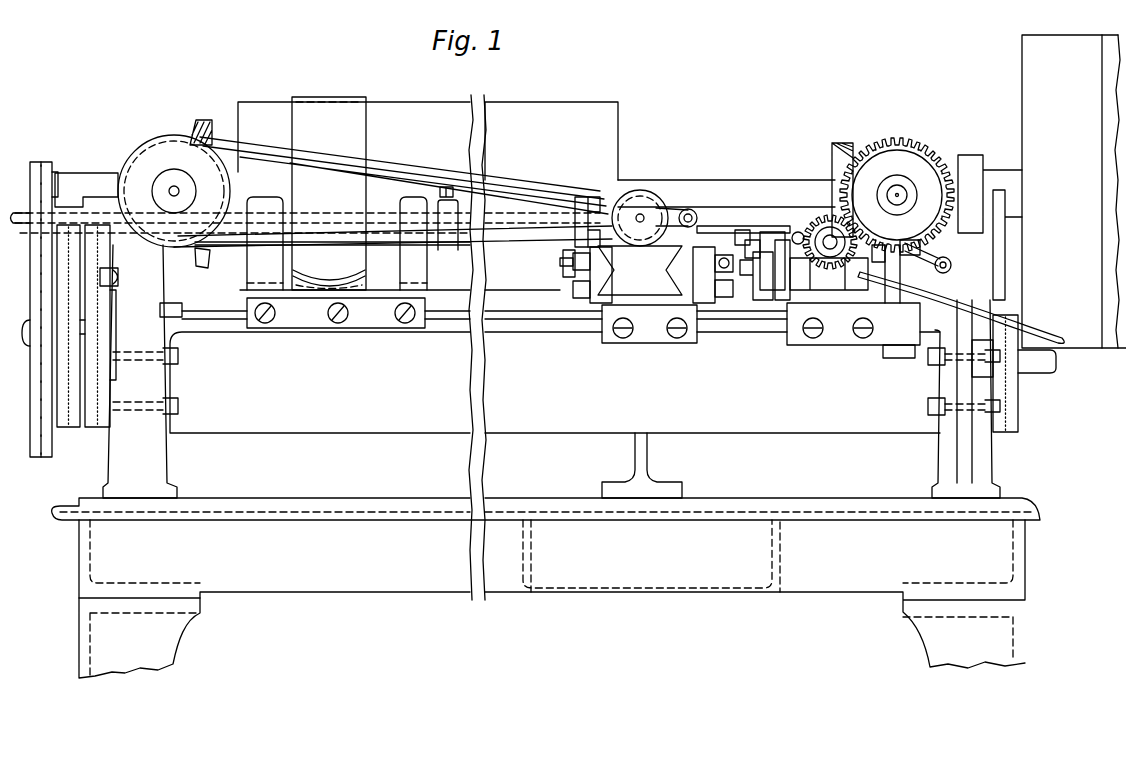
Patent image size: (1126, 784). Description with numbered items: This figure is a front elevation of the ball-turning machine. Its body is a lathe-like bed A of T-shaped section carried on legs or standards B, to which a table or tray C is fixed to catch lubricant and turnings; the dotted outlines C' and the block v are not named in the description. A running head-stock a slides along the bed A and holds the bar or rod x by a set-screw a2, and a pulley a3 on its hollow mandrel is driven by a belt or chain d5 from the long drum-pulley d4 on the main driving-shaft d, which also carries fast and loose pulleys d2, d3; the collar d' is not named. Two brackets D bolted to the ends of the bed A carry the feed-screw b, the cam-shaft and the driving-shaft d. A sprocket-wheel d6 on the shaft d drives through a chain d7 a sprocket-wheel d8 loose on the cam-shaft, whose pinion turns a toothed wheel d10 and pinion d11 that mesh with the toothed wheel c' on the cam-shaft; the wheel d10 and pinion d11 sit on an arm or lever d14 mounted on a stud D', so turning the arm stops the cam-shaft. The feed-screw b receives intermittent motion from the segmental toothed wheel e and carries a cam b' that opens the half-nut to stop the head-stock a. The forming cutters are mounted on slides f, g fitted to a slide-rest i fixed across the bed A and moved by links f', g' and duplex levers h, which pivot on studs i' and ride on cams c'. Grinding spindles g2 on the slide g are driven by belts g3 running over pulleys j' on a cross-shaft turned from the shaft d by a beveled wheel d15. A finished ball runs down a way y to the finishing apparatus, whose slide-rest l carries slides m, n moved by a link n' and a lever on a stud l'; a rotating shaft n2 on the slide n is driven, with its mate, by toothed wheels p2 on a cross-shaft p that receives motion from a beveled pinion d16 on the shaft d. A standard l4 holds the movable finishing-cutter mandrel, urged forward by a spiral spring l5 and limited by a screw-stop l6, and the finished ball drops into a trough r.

The bed A is at (473, 313).
The legs or standards B is at (552, 599).
The table or tray C is at (546, 512).
The base rail panel C' is at (651, 556).
The brackets D is at (551, 371).
The stud D' is at (123, 279).
The running head-stock a is at (377, 243).
The set-screw a2 is at (455, 188).
The pulley a3 is at (329, 271).
The feed-screw b is at (1044, 367).
The cam b' is at (1005, 358).
The toothed wheel c' is at (79, 326).
The main driving-shaft d is at (425, 203).
The collar d' is at (448, 225).
The fast pulley d2 is at (1042, 191).
The loose pulley d3 is at (1110, 191).
The long drum-pulley d4 is at (428, 141).
The belt or chain d5 is at (329, 193).
The sprocket-wheel d6 is at (52, 172).
The chain d7 is at (30, 250).
The sprocket-wheel d8 is at (17, 297).
The toothed wheel d10 is at (72, 328).
The toothed pinion d11 is at (97, 326).
The arm or lever d14 is at (116, 393).
The beveled wheel d15 is at (203, 118).
The beveled toothed pinion d16 is at (848, 178).
The segmental toothed wheel e is at (1014, 373).
The slide f is at (601, 275).
The link f' is at (582, 275).
The slide g is at (697, 275).
The link g' is at (714, 276).
The spindles g2 is at (640, 218).
The belts g3 is at (393, 195).
The duplex levers h is at (573, 262).
The slide-rest i is at (647, 294).
The studs i' is at (633, 259).
The pulleys j' is at (174, 201).
The slide-rest l is at (892, 274).
The stud or axis l' is at (755, 276).
The standard l4 is at (920, 253).
The spiral spring l5 is at (883, 253).
The screw-stop l6 is at (946, 271).
The slide m is at (768, 285).
The slide n is at (798, 270).
The link n' is at (829, 274).
The rotating shaft n2 is at (824, 242).
The cross-shaft p is at (897, 195).
The toothed wheels p2 is at (897, 195).
The trough r is at (961, 307).
The bearing block v is at (853, 329).
The bar or rod x is at (575, 222).
The way y is at (723, 220).